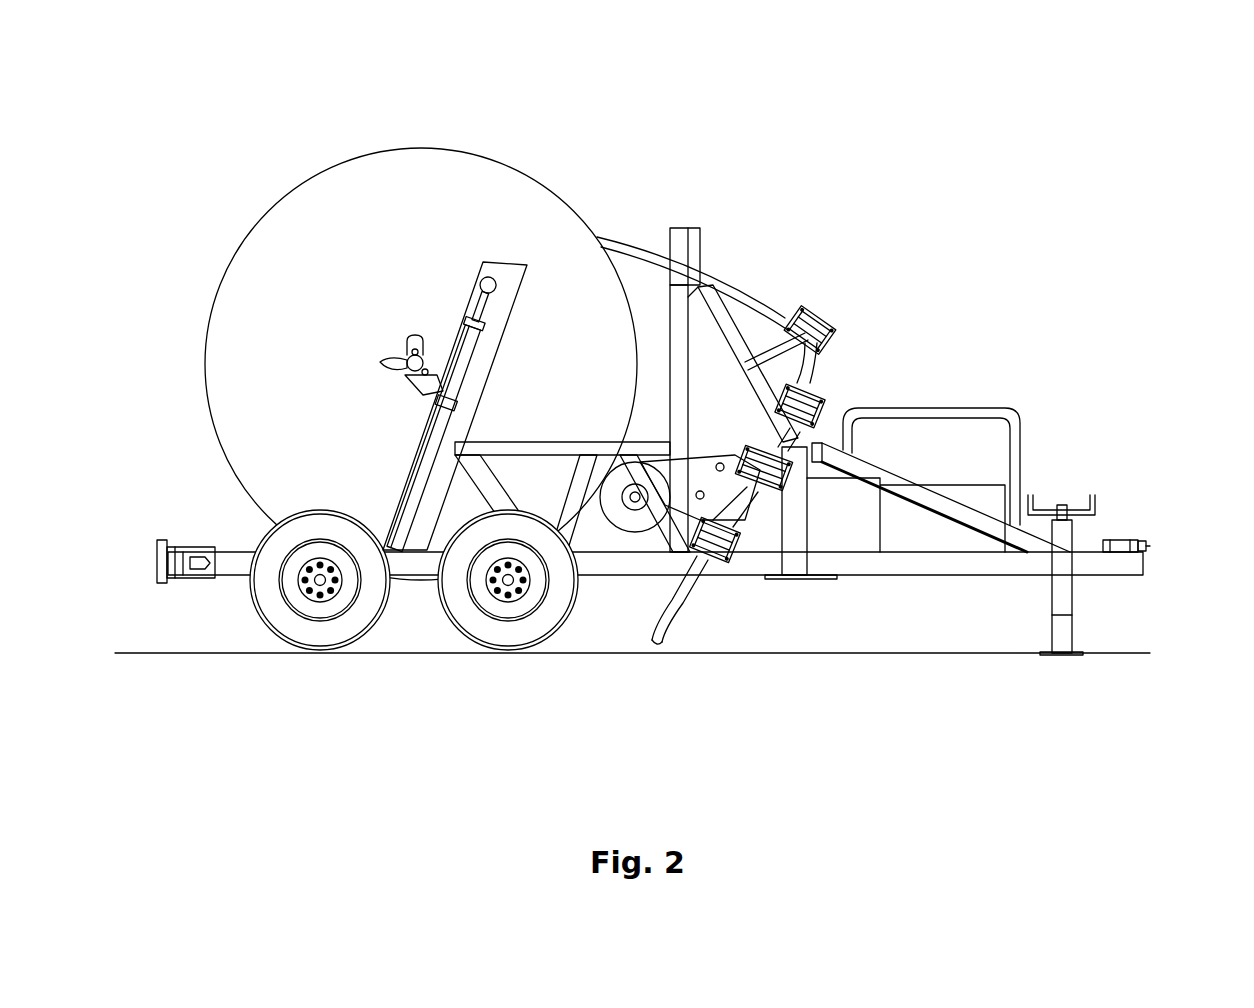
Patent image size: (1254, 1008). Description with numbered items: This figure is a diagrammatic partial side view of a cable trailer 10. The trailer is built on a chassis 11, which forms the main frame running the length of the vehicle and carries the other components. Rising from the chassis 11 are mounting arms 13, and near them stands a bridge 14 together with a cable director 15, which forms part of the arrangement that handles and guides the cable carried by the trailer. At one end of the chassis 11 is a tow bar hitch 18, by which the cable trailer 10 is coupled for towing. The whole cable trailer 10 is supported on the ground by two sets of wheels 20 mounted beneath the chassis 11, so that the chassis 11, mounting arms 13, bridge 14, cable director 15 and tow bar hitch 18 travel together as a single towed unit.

The cable trailer 10 is at (1100, 228).
The chassis 11 is at (758, 565).
The mounting arms 13 is at (513, 273).
The bridge 14 is at (733, 325).
The cable director 15 is at (696, 250).
The tow bar hitch 18 is at (1145, 535).
The wheels 20 is at (508, 635).